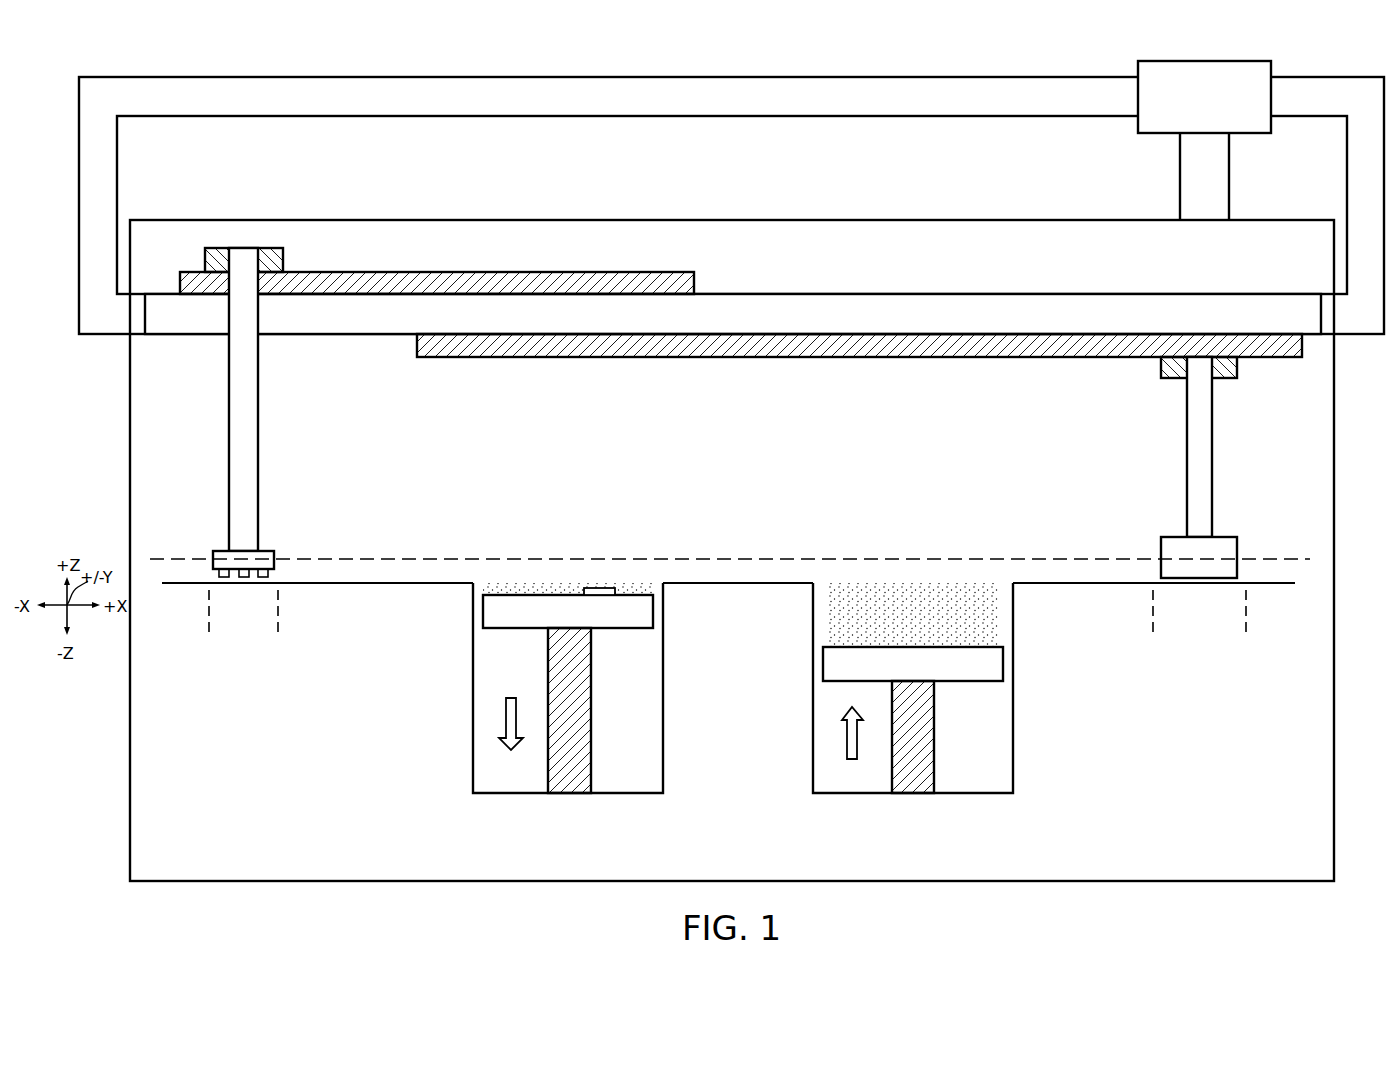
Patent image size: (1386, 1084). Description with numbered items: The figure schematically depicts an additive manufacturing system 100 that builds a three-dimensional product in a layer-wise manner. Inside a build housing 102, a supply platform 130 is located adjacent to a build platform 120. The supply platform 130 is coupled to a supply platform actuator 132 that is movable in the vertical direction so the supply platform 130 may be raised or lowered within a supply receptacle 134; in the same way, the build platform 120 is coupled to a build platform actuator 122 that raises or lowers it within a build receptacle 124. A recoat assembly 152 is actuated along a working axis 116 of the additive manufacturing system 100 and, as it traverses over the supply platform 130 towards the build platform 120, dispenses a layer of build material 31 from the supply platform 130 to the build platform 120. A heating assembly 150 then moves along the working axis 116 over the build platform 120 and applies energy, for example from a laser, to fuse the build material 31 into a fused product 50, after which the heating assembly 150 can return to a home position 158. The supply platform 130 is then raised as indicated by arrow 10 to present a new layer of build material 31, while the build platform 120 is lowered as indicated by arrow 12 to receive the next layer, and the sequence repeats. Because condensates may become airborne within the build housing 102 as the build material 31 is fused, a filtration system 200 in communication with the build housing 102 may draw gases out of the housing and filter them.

The additive manufacturing system 100 is at (102, 874).
The build housing 102 is at (1024, 219).
The filtration system 200 is at (1273, 134).
The heating assembly 150 is at (209, 545).
The recoat assembly 152 is at (1234, 529).
The working axis 116 is at (1291, 559).
The home position 158 is at (263, 634).
The build receptacle 124 is at (493, 782).
The build material 31 is at (618, 584).
The build platform 120 is at (495, 648).
The fused product 50 is at (599, 588).
The build platform actuator 122 is at (591, 773).
The arrow 12 is at (503, 709).
The supply receptacle 134 is at (856, 784).
The supply platform 130 is at (992, 698).
The supply platform actuator 132 is at (935, 773).
The arrow 10 is at (845, 730).